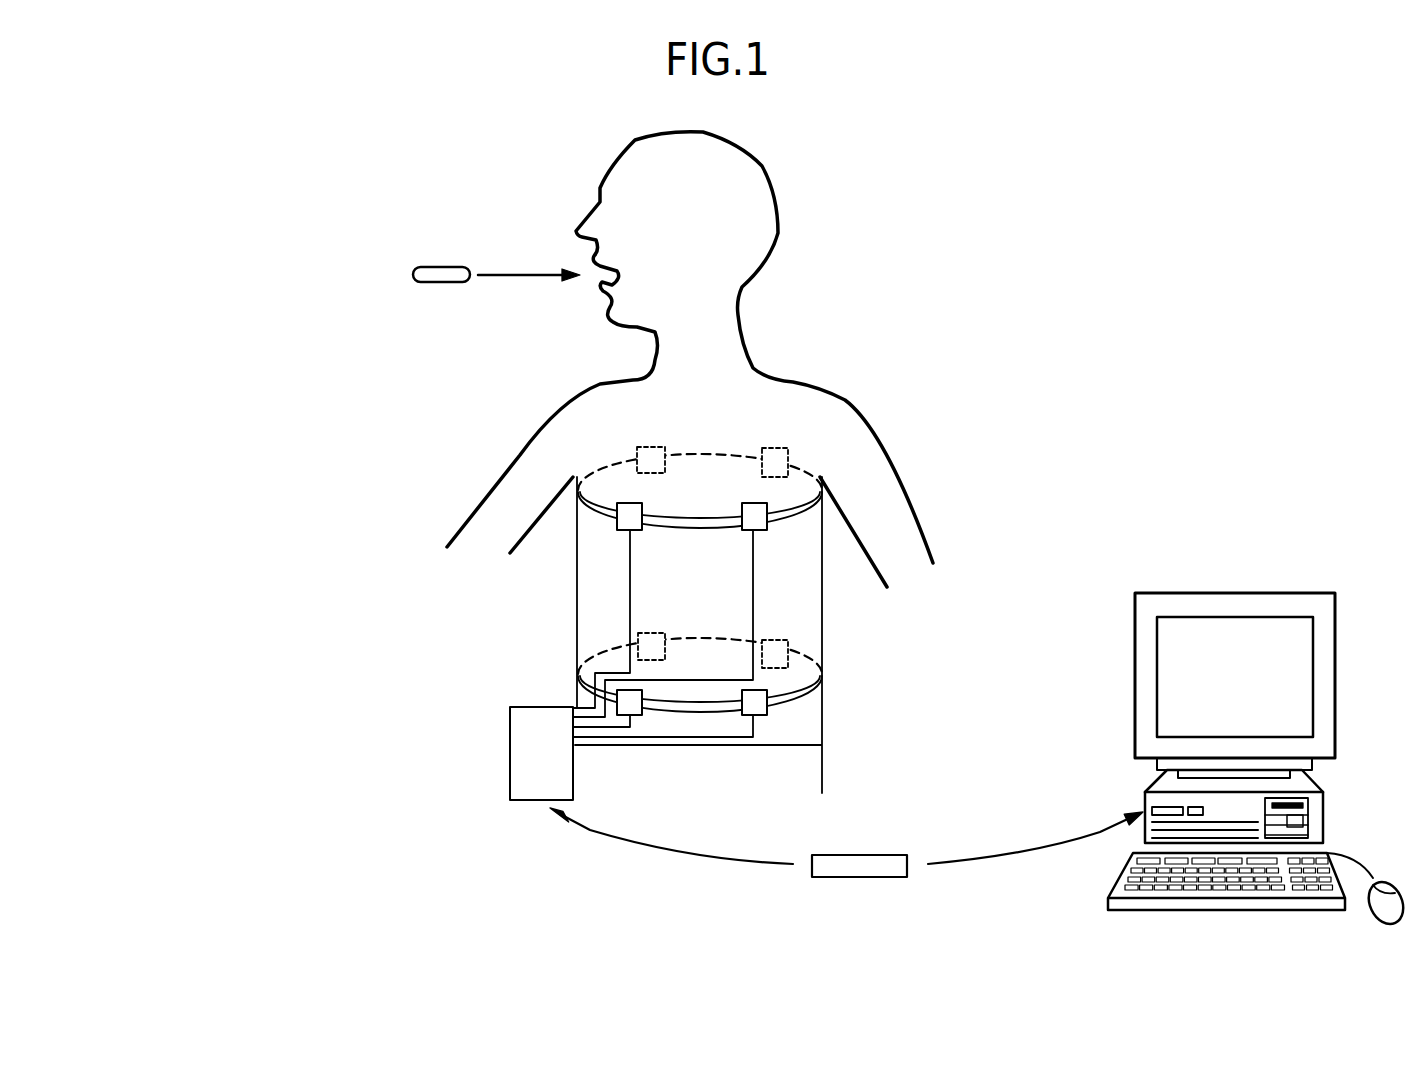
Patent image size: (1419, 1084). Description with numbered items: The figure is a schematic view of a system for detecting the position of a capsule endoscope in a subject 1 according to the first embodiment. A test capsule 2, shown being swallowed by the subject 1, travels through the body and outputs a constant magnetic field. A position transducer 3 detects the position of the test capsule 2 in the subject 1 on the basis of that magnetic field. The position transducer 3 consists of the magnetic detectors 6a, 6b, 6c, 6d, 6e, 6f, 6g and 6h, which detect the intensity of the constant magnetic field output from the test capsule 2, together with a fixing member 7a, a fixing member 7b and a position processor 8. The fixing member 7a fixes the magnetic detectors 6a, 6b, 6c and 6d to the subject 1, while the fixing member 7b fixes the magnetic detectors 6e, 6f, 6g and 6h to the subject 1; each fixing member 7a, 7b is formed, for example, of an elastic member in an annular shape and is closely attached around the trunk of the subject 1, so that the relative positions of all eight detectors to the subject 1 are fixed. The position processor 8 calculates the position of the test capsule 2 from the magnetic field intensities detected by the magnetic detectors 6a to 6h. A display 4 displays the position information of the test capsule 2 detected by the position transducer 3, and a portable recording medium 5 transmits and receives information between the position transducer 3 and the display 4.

The subject 1 is at (768, 167).
The test capsule 2 is at (441, 283).
The position transducer 3 is at (192, 738).
The display 4 is at (1227, 593).
The portable recording medium 5 is at (855, 868).
The magnetic detector 6a is at (617, 528).
The magnetic detector 6b is at (767, 530).
The magnetic detector 6c is at (768, 448).
The magnetic detector 6d is at (650, 447).
The magnetic detector 6e is at (638, 715).
The magnetic detector 6f is at (757, 715).
The magnetic detector 6g is at (768, 640).
The magnetic detector 6h is at (647, 633).
The fixing member 7a is at (583, 507).
The fixing member 7b is at (700, 710).
The position processor 8 is at (510, 709).